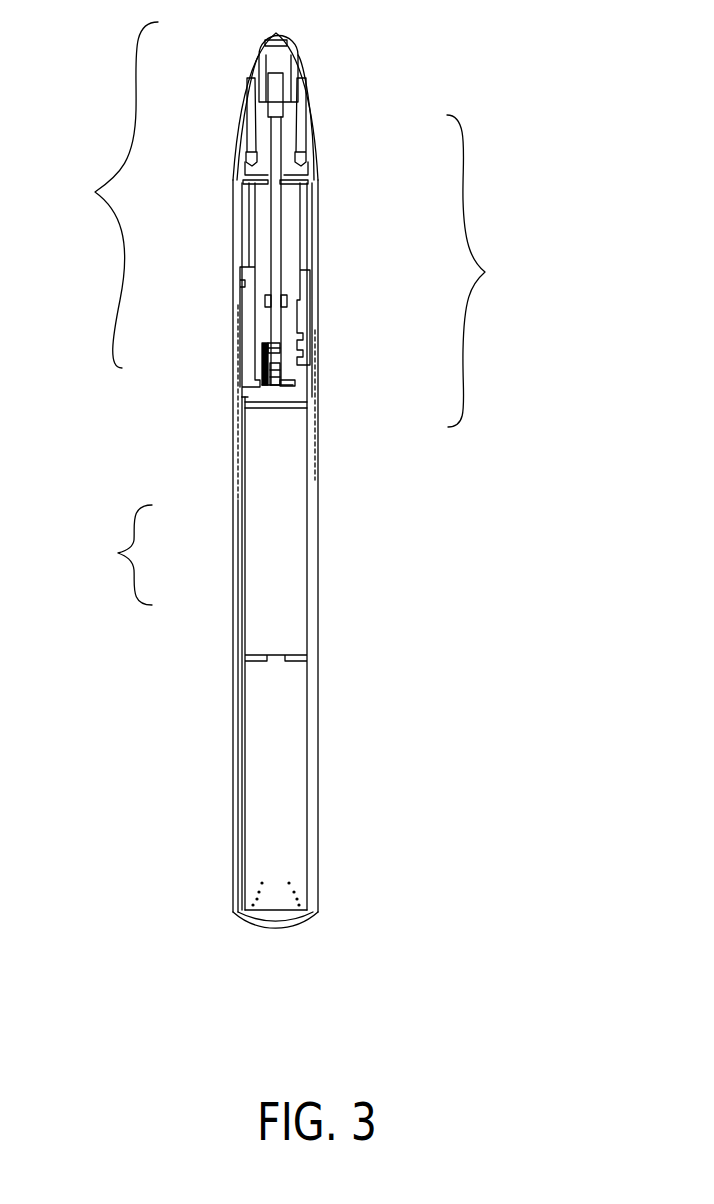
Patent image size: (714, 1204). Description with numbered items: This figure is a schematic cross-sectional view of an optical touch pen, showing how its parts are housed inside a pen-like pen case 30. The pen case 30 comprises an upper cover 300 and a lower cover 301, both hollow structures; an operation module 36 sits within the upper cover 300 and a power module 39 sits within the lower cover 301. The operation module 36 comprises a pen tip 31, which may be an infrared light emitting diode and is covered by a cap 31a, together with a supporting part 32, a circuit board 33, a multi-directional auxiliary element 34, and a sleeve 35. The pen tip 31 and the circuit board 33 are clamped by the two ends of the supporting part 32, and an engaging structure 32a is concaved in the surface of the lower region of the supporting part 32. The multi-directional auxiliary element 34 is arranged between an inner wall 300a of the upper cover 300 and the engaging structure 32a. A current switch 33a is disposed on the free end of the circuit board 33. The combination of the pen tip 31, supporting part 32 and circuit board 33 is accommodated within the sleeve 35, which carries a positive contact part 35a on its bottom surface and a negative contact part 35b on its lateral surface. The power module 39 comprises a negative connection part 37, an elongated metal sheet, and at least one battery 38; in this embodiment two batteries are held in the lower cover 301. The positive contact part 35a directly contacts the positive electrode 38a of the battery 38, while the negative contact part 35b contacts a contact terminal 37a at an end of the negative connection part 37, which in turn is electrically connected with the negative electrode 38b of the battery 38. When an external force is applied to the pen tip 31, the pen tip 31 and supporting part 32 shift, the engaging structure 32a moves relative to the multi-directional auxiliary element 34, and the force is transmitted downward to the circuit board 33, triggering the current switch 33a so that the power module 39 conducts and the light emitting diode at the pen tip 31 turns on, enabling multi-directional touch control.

The pen case 30 is at (488, 271).
The pen tip 31 is at (272, 53).
The cap 31a is at (296, 40).
The supporting part 32 is at (266, 119).
The engaging structure 32a is at (301, 148).
The circuit board 33 is at (275, 247).
The current switch 33a is at (262, 390).
The multi-directional auxiliary element 34 is at (248, 156).
The sleeve 35 is at (243, 386).
The positive contact part 35a is at (280, 393).
The negative contact part 35b is at (243, 402).
The operation module 36 is at (107, 195).
The negative connection part 37 is at (242, 518).
The contact terminal 37a is at (241, 401).
The battery 38 is at (283, 582).
The positive electrode 38a is at (302, 402).
The negative electrode 38b is at (277, 909).
The power module 39 is at (117, 555).
The upper cover 300 is at (313, 223).
The inner wall 300a is at (305, 128).
The lower cover 301 is at (308, 447).